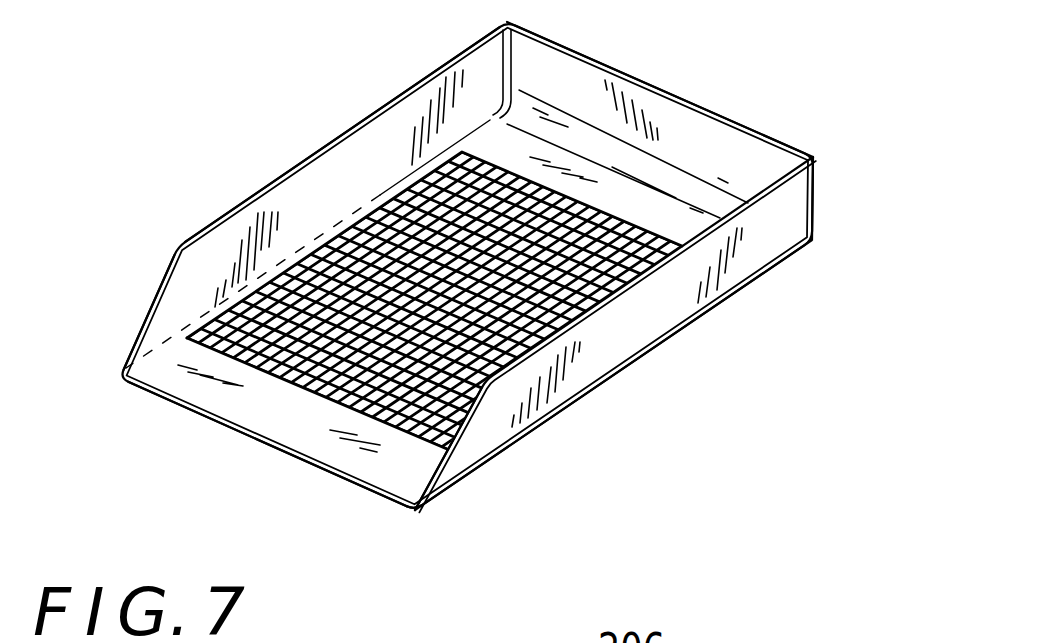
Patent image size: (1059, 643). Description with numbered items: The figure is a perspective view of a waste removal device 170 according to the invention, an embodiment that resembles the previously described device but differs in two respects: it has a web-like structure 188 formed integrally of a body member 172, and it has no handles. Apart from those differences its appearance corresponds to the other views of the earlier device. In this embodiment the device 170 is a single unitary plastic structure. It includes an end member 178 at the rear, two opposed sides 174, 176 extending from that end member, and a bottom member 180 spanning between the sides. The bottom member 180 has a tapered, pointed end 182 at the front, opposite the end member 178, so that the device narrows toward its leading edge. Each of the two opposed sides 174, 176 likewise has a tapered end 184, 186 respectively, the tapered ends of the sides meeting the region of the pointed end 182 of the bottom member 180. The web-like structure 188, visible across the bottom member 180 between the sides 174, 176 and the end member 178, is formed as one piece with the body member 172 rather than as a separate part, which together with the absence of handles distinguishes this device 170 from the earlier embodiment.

The device 170 is at (175, 243).
The body member 172 is at (468, 452).
The side 174 is at (762, 240).
The side 176 is at (364, 121).
The end member 178 is at (677, 123).
The bottom member 180 is at (190, 393).
The tapered, pointed end 182 is at (365, 492).
The tapered end 184 is at (446, 470).
The tapered end 186 is at (153, 289).
The web-like structure 188 is at (302, 376).